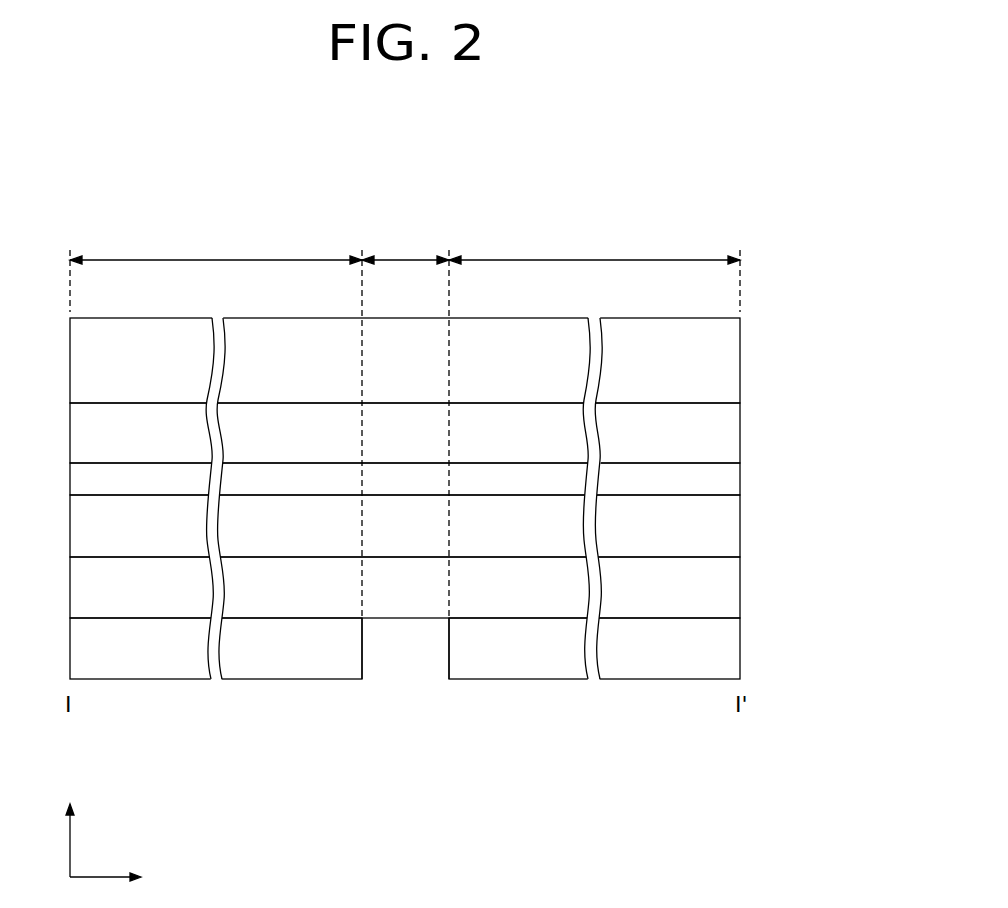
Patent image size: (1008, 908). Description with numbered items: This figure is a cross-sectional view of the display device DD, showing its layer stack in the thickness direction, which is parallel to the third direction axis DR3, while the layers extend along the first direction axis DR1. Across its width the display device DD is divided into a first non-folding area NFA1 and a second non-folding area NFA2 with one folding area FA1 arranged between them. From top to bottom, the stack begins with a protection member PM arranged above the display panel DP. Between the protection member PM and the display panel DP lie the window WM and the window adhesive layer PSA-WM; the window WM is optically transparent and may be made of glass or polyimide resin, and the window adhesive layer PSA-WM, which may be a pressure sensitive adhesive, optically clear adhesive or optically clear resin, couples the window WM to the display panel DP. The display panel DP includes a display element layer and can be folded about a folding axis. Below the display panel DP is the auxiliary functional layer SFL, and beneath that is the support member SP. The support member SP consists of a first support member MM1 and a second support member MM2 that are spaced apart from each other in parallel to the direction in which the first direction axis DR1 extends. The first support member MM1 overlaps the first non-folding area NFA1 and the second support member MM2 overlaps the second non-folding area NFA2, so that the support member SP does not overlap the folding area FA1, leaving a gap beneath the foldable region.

The display device DD is at (683, 195).
The first non-folding area NFA1 is at (216, 248).
The folding area FA1 is at (405, 425).
The second non-folding area NFA2 is at (594, 248).
The protection member PM is at (728, 362).
The window WM is at (728, 430).
The window adhesive layer PSA-WM is at (728, 483).
The display panel DP is at (728, 527).
The auxiliary functional layer SFL is at (728, 587).
The first support member MM1 is at (288, 665).
The second support member MM2 is at (522, 665).
The support member SP is at (547, 749).
The first direction axis DR1 is at (129, 879).
The third direction axis DR3 is at (70, 825).